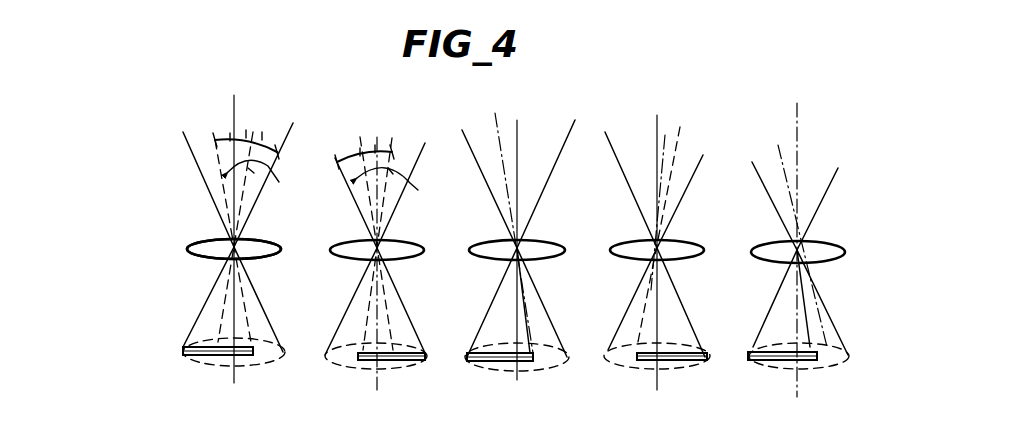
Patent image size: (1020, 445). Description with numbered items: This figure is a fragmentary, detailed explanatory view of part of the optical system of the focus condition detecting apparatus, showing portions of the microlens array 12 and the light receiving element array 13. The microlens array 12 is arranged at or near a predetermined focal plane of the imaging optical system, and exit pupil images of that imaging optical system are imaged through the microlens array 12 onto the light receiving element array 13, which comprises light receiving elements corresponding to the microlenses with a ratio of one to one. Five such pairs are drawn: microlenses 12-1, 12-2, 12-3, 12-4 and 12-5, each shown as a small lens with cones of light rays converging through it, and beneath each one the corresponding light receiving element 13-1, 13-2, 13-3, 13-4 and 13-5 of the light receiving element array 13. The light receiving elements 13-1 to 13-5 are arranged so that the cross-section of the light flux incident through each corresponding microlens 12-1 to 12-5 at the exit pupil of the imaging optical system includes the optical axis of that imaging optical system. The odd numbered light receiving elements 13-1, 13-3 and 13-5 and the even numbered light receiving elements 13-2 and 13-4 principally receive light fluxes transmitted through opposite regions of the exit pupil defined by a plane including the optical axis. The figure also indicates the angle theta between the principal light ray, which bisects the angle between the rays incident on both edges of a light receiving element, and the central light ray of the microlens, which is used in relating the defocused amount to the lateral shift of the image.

The microlens array 12 is at (183, 236).
The microlens 12-1 is at (253, 243).
The microlens 12-2 is at (393, 242).
The microlens 12-3 is at (530, 243).
The microlens 12-4 is at (672, 243).
The microlens 12-5 is at (832, 248).
The light receiving element array 13 is at (181, 322).
The light receiving element 13-1 is at (185, 351).
The light receiving element 13-2 is at (332, 347).
The light receiving element 13-3 is at (472, 350).
The light receiving element 13-4 is at (632, 348).
The light receiving element 13-5 is at (757, 345).